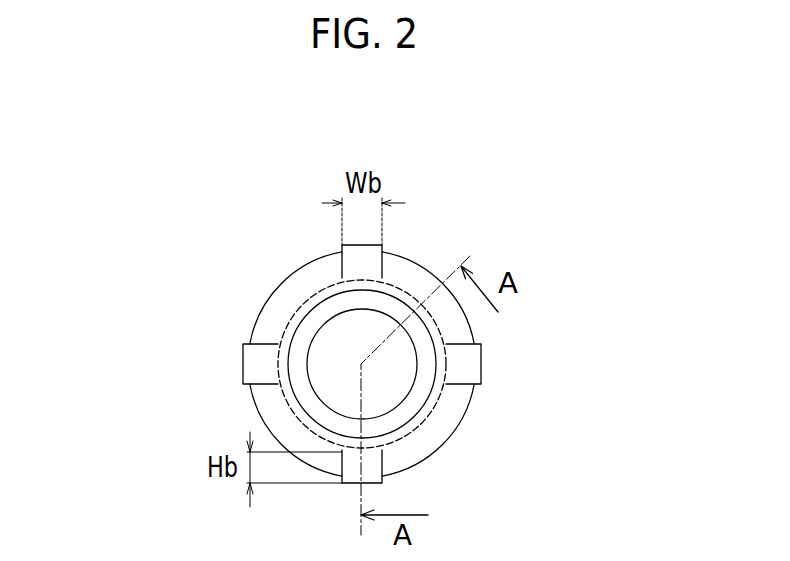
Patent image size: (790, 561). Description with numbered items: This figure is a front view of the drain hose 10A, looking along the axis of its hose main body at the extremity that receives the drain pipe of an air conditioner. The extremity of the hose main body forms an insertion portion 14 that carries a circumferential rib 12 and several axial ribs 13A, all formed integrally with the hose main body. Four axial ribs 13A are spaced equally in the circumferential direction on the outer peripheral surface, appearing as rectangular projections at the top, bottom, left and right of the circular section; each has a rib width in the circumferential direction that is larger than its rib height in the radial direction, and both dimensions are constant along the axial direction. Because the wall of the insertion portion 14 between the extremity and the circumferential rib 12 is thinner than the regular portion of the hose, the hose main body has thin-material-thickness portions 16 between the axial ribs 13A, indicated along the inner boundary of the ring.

The drain hose 10A is at (248, 238).
The circumferential rib 12 is at (313, 270).
The axial ribs 13A is at (372, 262).
The insertion portion 14 is at (217, 302).
The thin-material-thickness portions 16 is at (315, 297).